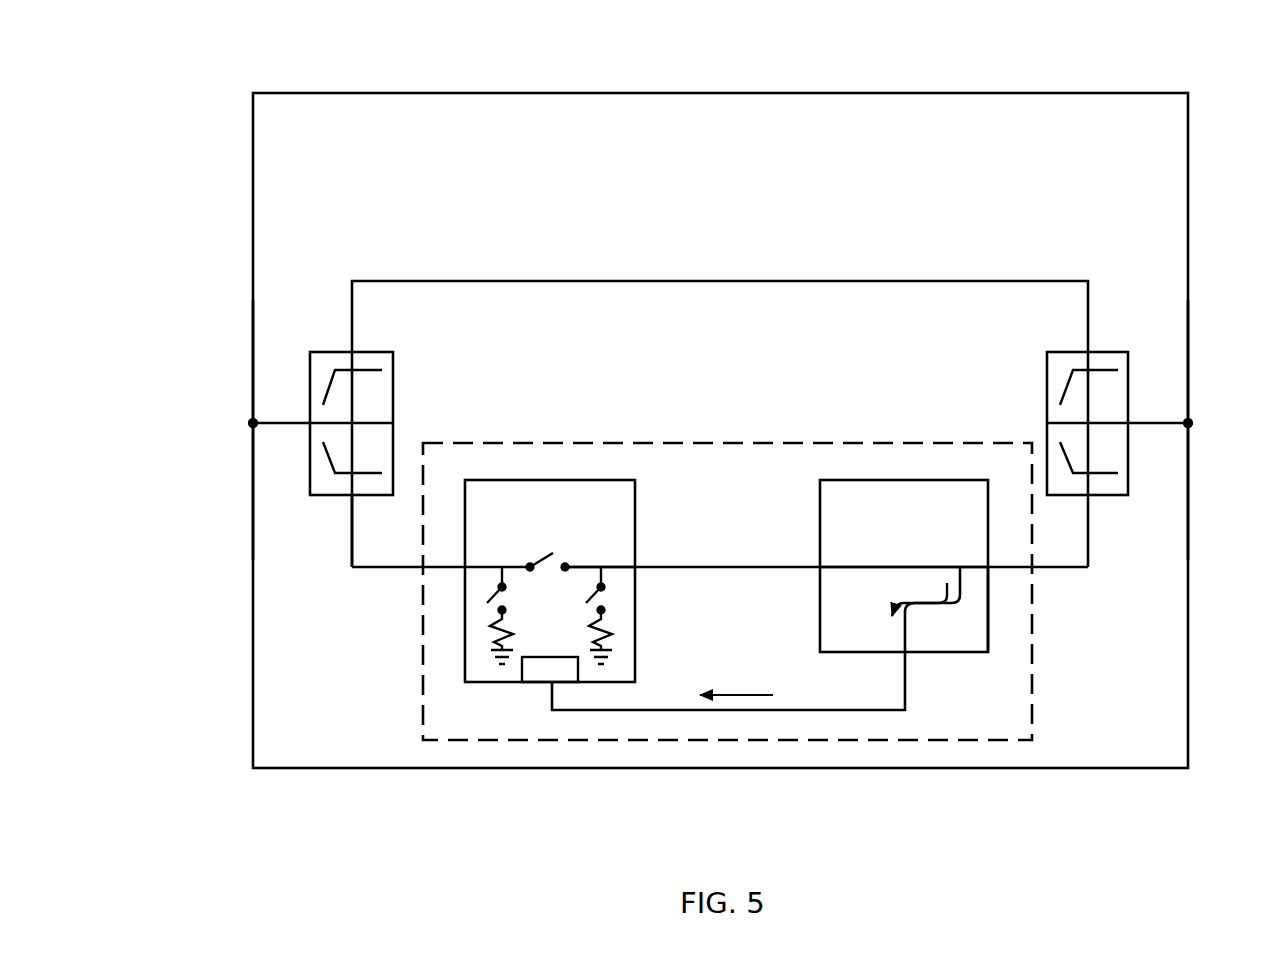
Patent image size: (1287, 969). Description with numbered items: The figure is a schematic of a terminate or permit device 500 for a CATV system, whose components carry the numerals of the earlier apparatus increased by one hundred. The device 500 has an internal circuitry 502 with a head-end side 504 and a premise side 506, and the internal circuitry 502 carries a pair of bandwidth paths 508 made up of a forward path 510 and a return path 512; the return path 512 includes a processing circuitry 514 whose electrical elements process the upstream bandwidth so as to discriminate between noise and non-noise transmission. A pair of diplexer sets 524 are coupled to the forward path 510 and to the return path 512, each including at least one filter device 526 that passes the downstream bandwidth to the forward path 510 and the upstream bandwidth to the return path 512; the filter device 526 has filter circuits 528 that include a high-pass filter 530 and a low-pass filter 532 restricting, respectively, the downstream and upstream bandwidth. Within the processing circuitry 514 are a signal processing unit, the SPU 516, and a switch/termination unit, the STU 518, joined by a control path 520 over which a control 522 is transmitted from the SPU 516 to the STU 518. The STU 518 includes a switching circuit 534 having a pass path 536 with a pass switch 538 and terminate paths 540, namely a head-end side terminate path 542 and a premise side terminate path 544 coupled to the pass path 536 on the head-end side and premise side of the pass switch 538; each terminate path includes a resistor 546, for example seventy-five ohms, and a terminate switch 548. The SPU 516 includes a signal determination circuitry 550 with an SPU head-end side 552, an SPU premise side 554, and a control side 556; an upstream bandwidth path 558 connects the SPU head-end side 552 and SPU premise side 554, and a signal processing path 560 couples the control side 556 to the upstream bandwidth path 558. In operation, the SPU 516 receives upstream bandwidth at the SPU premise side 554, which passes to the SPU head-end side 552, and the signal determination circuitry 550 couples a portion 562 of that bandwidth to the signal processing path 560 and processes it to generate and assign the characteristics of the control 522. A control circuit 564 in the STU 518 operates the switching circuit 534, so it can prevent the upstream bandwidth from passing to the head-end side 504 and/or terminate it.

The terminate or permit device 500 is at (988, 93).
The internal circuitry 502 is at (764, 165).
The head-end side 504 is at (202, 338).
The premise side 506 is at (1202, 377).
The pair of bandwidth paths 508 is at (736, 560).
The forward path 510 is at (410, 281).
The return path 512 is at (352, 537).
The processing circuitry 514 is at (453, 740).
The signal processing unit (SPU) 516 is at (990, 607).
The switch/termination unit (STU) 518 is at (465, 620).
The control path 520 is at (628, 710).
The control 522 is at (735, 696).
The diplexer sets 524 is at (1040, 349).
The filter device 526 is at (345, 352).
The filter circuits 528 is at (328, 482).
The high-pass filter 530 is at (383, 394).
The low-pass filter 532 is at (382, 444).
The switching circuit 534 is at (539, 503).
The pass path 536 is at (617, 565).
The pass switch 538 is at (546, 553).
The terminate paths 540 is at (600, 674).
The head-end side terminate path 542 is at (484, 640).
The premise side terminate path 544 is at (614, 619).
The resistor 546 is at (590, 627).
The terminate switch 548 is at (593, 590).
The signal determination circuitry 550 is at (964, 630).
The SPU head-end side 552 is at (803, 556).
The SPU premise side 554 is at (999, 559).
The control side 556 is at (886, 664).
The upstream bandwidth path 558 is at (888, 567).
The signal processing path 560 is at (933, 605).
The coupled portion of the upstream bandwidth 562 is at (940, 600).
The control circuit 564 is at (550, 669).